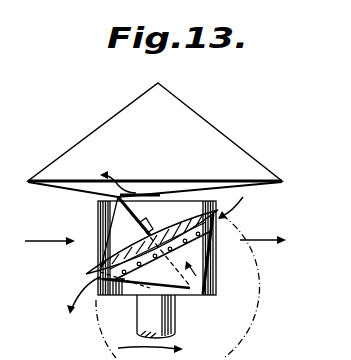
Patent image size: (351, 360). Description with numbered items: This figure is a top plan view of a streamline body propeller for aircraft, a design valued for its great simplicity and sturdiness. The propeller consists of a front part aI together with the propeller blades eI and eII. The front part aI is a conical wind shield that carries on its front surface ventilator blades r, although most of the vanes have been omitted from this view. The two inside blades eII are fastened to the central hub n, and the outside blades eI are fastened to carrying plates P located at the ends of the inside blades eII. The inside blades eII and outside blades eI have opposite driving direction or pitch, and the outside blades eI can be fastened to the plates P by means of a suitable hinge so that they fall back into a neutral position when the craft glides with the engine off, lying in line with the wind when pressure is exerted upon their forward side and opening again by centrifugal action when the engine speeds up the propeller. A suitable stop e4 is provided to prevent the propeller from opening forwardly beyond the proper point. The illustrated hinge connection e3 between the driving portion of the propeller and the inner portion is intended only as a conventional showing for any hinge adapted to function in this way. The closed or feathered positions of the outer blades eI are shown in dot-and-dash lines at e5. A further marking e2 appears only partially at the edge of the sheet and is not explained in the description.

The conical roof cap aI is at (243, 163).
The roof surfaces r is at (140, 152).
The housing n is at (212, 282).
The wedge member eII is at (135, 231).
The inclined hatched bar e4 is at (152, 241).
The riveted plate e3 is at (196, 254).
The pivot path eI is at (88, 271).
The circle e5 is at (278, 292).
The shaft P is at (152, 272).
The element e2 is at (6, 343).